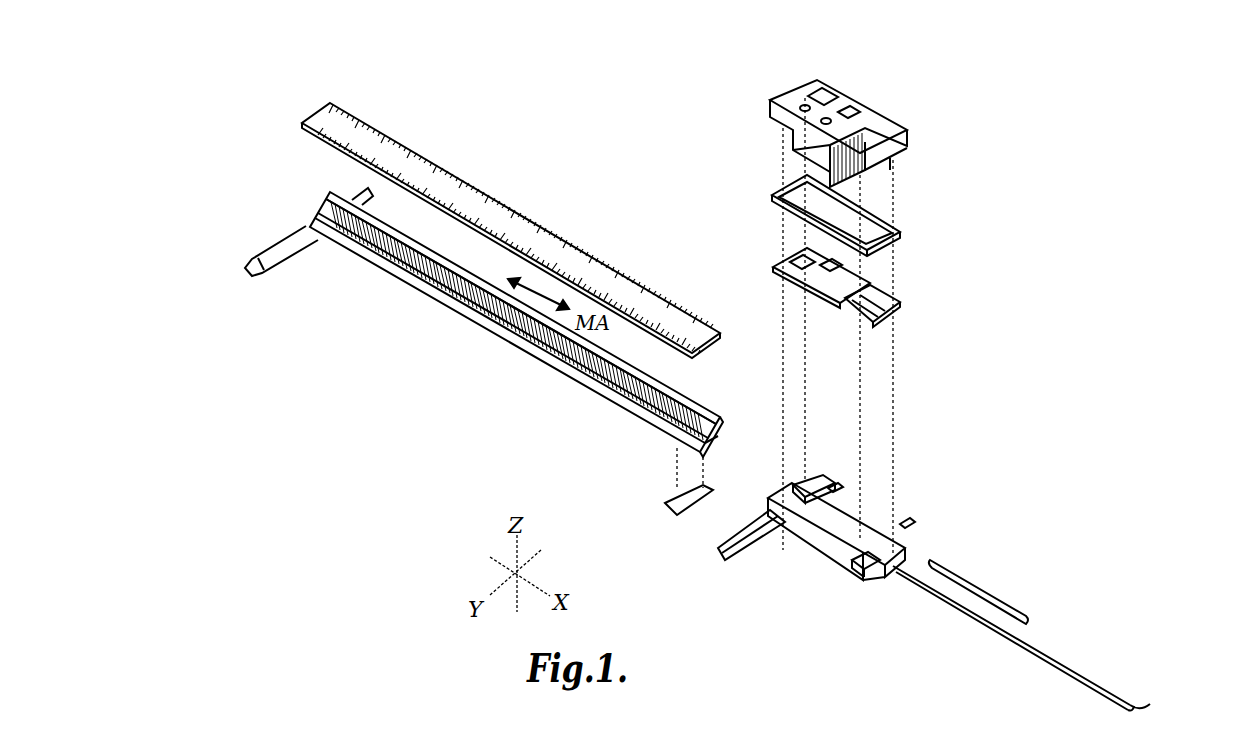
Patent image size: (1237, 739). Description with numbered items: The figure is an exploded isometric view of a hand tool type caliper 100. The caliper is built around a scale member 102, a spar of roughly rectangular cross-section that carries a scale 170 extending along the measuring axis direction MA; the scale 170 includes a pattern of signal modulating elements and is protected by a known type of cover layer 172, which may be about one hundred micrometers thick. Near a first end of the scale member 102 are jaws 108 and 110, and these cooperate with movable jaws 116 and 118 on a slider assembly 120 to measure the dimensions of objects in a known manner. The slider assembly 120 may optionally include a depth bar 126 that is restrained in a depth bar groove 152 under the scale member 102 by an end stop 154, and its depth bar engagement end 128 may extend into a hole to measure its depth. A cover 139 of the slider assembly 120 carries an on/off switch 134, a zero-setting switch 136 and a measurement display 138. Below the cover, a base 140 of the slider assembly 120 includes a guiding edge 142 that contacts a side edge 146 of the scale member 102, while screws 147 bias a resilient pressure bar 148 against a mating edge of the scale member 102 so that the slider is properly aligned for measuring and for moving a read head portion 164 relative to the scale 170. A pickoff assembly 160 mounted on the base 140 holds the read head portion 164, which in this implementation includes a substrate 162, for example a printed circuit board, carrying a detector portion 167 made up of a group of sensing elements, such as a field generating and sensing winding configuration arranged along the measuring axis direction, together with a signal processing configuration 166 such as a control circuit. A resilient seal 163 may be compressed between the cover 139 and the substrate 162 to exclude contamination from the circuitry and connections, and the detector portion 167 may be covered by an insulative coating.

The hand tool type caliper 100 is at (408, 440).
The scale member 102 is at (516, 324).
The jaw 108 is at (268, 243).
The jaw 110 is at (357, 205).
The movable jaw 116 is at (765, 533).
The movable jaw 118 is at (810, 475).
The slider assembly 120 is at (1073, 192).
The depth bar 126 is at (985, 622).
The depth bar engagement end 128 is at (1135, 708).
The on/off switch 134 is at (805, 105).
The zero-setting switch 136 is at (830, 117).
The measurement display 138 is at (822, 93).
The cover 139 is at (849, 111).
The base 140 is at (883, 538).
The guiding edge 142 is at (893, 543).
The side edge 146 is at (573, 383).
The screws 147 is at (833, 492).
The resilient pressure bar 148 is at (1000, 590).
The depth bar groove 152 is at (705, 438).
The end stop 154 is at (675, 497).
The pickoff assembly 160 is at (984, 108).
The substrate 162 is at (796, 265).
The resilient seal 163 is at (900, 220).
The read head portion 164 is at (783, 275).
The signal processing configuration 166 is at (790, 255).
The detector portion 167 is at (850, 315).
The scale 170 is at (530, 343).
The cover layer 172 is at (513, 223).